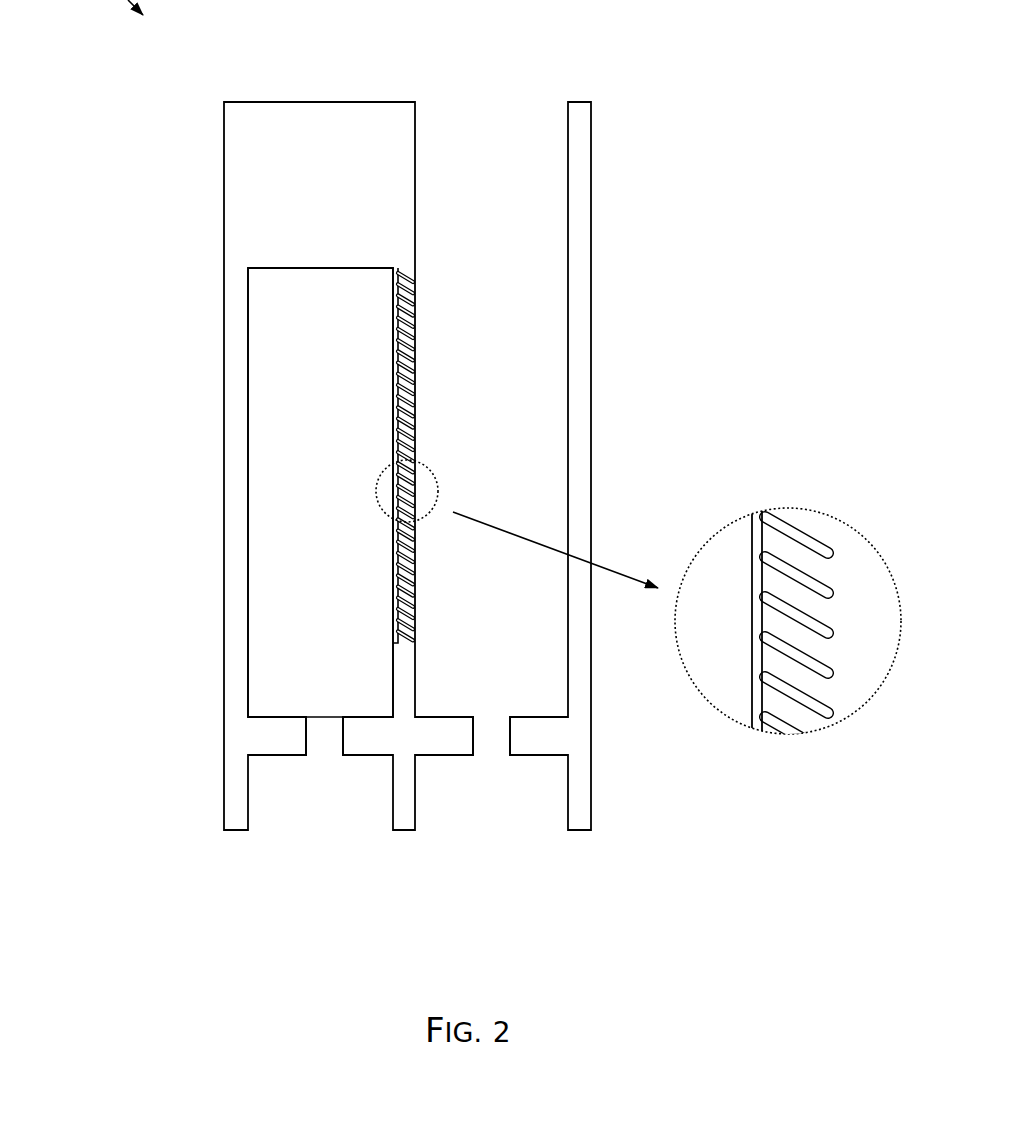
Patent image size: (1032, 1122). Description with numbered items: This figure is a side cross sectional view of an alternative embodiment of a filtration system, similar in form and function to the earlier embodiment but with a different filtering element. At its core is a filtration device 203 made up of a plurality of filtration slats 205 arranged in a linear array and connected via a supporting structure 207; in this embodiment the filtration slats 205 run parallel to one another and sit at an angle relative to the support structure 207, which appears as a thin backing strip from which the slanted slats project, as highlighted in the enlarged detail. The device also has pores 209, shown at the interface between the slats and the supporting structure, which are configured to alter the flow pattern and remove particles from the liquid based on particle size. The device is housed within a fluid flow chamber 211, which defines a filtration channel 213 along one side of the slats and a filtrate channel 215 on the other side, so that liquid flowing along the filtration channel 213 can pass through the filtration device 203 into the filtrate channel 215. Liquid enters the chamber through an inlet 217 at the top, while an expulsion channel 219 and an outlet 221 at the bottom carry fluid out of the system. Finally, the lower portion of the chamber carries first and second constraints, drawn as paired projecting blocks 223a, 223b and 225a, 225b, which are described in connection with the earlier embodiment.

The filtration device 203 is at (377, 352).
The filtration slats 205 is at (816, 532).
The supporting structure 207 is at (752, 548).
The pores 209 is at (748, 633).
The fluid flow chamber 211 is at (224, 210).
The filtration channel 213 is at (533, 283).
The filtrate channel 215 is at (282, 395).
The inlet 217 is at (488, 105).
The expulsion channel 219 is at (503, 800).
The outlet 221 is at (293, 795).
The first constraint 223a is at (268, 717).
The first constraint 223b is at (363, 755).
The second constraint 225a is at (440, 717).
The second constraint 225b is at (533, 755).